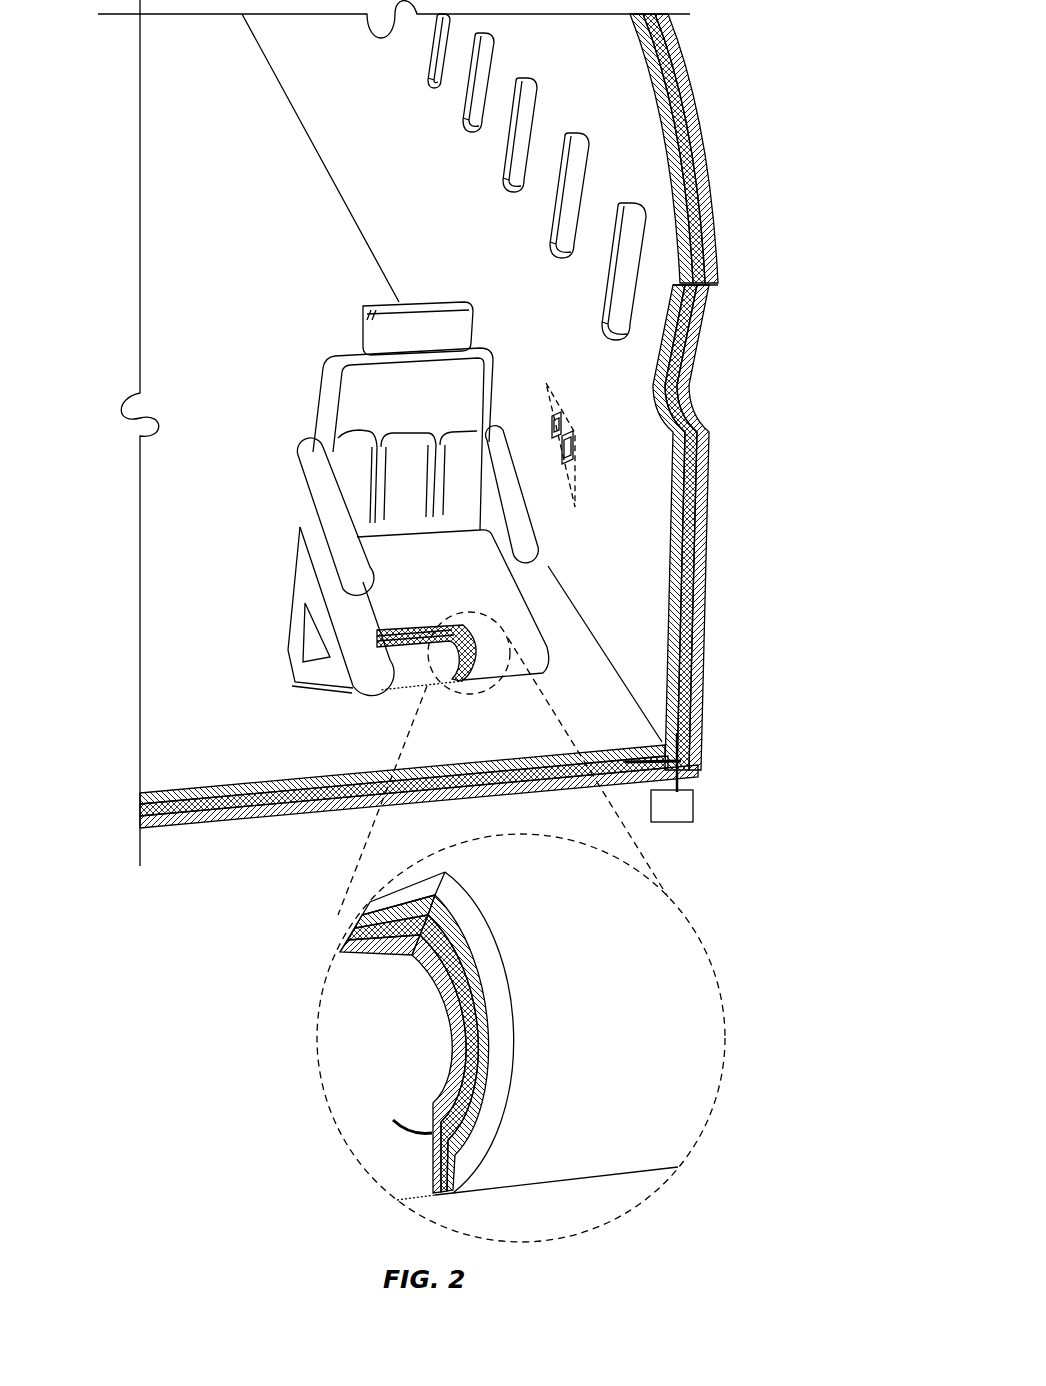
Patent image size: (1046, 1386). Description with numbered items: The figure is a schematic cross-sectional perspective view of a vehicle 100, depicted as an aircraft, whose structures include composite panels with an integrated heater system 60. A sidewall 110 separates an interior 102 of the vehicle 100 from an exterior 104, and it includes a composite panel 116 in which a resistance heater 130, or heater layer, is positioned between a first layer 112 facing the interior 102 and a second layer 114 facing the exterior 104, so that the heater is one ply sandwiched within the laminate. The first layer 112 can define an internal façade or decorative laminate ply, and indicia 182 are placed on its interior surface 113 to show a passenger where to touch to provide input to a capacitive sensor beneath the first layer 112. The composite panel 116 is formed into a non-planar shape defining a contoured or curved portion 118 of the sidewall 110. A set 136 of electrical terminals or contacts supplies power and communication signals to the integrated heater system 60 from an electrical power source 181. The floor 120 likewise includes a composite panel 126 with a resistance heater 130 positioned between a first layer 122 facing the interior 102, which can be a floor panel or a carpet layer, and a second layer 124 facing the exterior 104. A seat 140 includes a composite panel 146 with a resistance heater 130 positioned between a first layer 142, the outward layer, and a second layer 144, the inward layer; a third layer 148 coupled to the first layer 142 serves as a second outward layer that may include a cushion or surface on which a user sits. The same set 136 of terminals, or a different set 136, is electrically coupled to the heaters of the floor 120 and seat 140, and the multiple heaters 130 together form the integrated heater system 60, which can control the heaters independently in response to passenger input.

The integrated heater system 60 is at (546, 378).
The vehicle 100 is at (729, 66).
The interior 102 is at (255, 358).
The exterior 104 is at (801, 342).
The sidewall 110 is at (712, 171).
The first layer 112 is at (676, 527).
The interior surface 113 is at (640, 571).
The second layer 114 is at (708, 563).
The composite panel 116 is at (743, 489).
The curved portion 118 is at (709, 100).
The floor 120 is at (198, 833).
The first layer 122 is at (212, 792).
The second layer 124 is at (272, 815).
The composite panel 126 is at (235, 835).
The resistance heater 130 is at (698, 448).
The set of electrical terminals 136 is at (641, 748).
The seat 140 is at (287, 468).
The first layer 142 is at (435, 1165).
The second layer 144 is at (425, 992).
The composite panel 146 is at (388, 1045).
The third layer 148 is at (433, 1190).
The electrical power source 181 is at (672, 806).
The indicia 182 is at (568, 418).